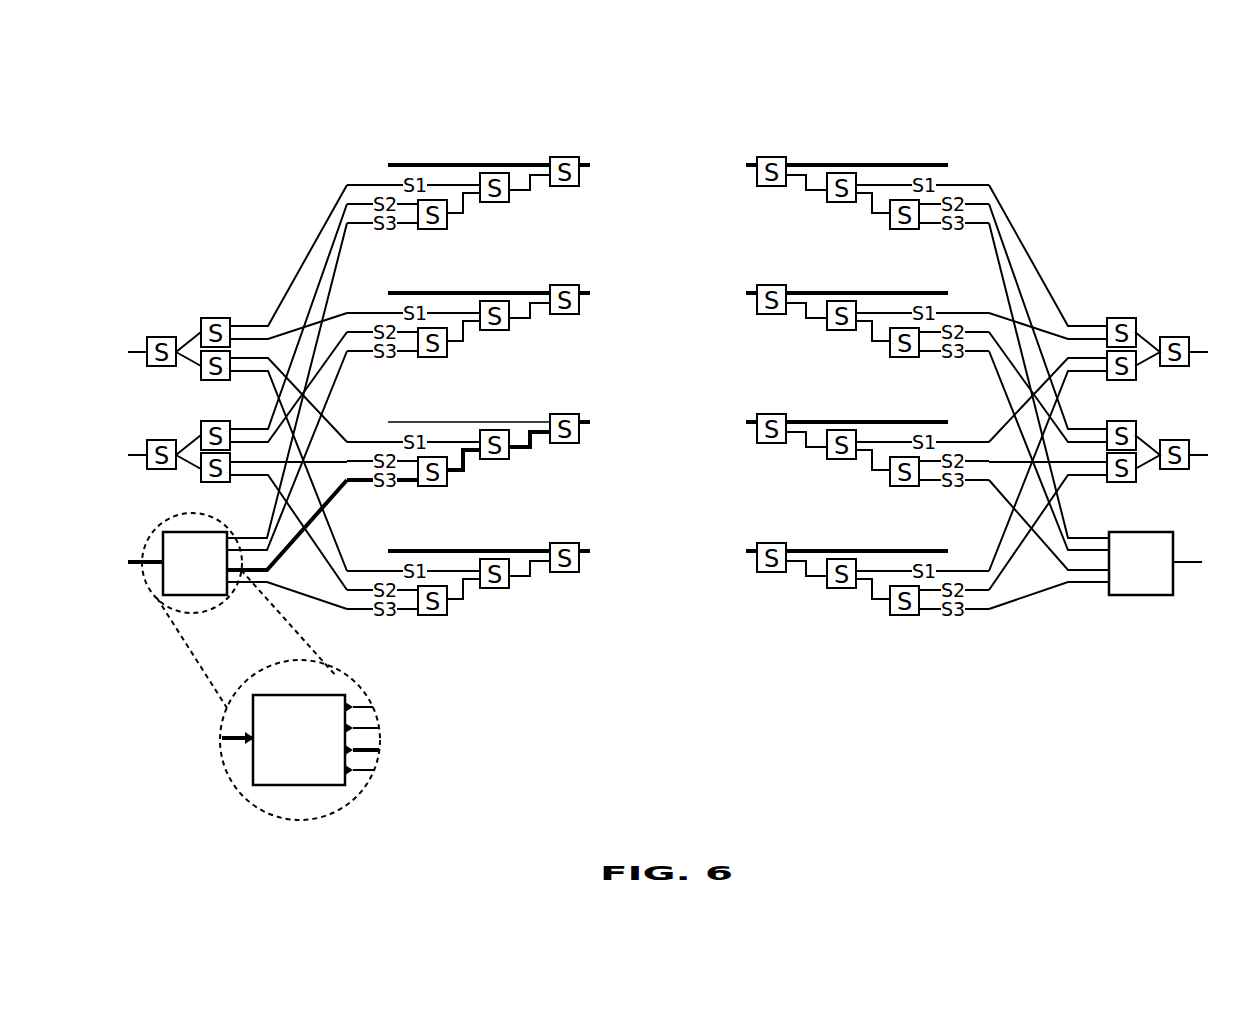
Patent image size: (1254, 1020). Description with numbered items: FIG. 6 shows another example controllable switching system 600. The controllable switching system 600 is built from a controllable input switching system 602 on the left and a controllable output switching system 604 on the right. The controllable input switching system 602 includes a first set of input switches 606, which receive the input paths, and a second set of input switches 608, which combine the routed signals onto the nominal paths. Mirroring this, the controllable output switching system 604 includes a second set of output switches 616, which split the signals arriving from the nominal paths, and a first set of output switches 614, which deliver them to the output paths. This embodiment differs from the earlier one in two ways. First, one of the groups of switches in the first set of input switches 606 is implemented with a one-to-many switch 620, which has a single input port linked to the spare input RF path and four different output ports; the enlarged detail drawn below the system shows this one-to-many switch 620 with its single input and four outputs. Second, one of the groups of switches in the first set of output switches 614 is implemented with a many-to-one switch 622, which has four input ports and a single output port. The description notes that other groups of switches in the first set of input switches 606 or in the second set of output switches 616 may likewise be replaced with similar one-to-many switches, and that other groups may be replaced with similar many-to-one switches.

The controllable switching system 600 is at (155, 111).
The controllable input switching system 602 is at (301, 134).
The controllable output switching system 604 is at (1023, 134).
The first set of input switches 606 is at (174, 310).
The second set of input switches 608 is at (473, 625).
The first set of output switches 614 is at (1140, 295).
The second set of output switches 616 is at (842, 626).
The one-to-many switch 620 is at (302, 785).
The many-to-one switch 622 is at (1145, 595).